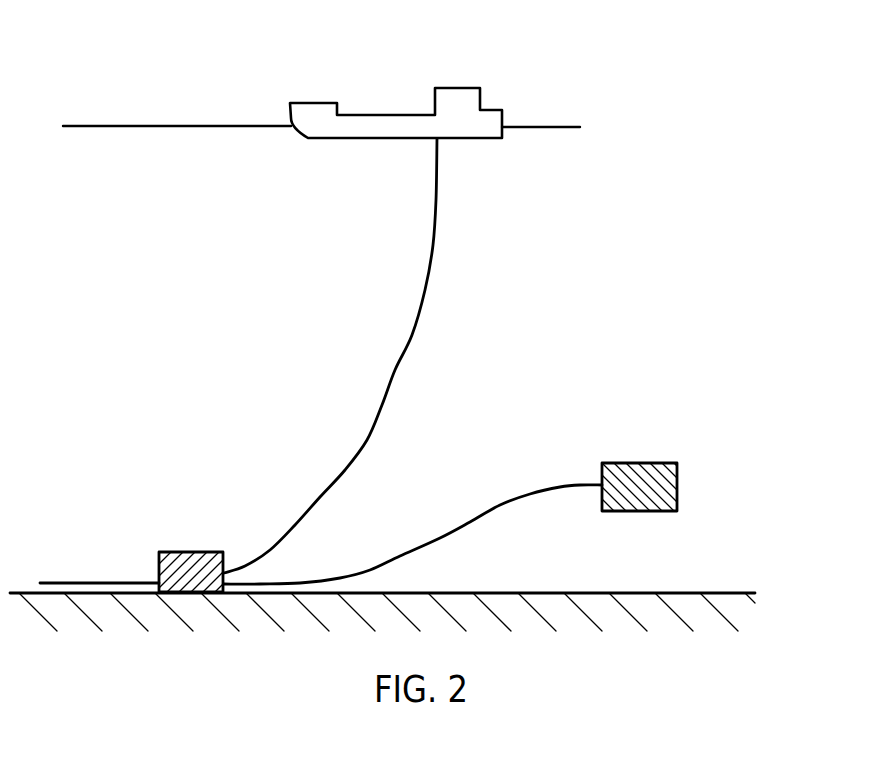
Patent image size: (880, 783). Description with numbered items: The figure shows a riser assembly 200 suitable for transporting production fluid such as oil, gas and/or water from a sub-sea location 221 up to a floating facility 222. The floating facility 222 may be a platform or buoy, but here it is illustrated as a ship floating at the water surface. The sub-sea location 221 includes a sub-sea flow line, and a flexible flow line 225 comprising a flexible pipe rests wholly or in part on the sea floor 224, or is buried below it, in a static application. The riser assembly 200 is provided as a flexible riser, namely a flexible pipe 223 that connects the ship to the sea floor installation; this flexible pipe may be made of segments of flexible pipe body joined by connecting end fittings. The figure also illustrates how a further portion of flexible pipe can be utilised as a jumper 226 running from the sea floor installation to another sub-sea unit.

The riser assembly 200 is at (238, 336).
The sub-sea location 221 is at (191, 552).
The floating facility 222 is at (312, 103).
The flexible pipe 223 is at (378, 411).
The sea floor 224 is at (695, 593).
The flexible flow line 225 is at (105, 583).
The jumper 226 is at (520, 501).